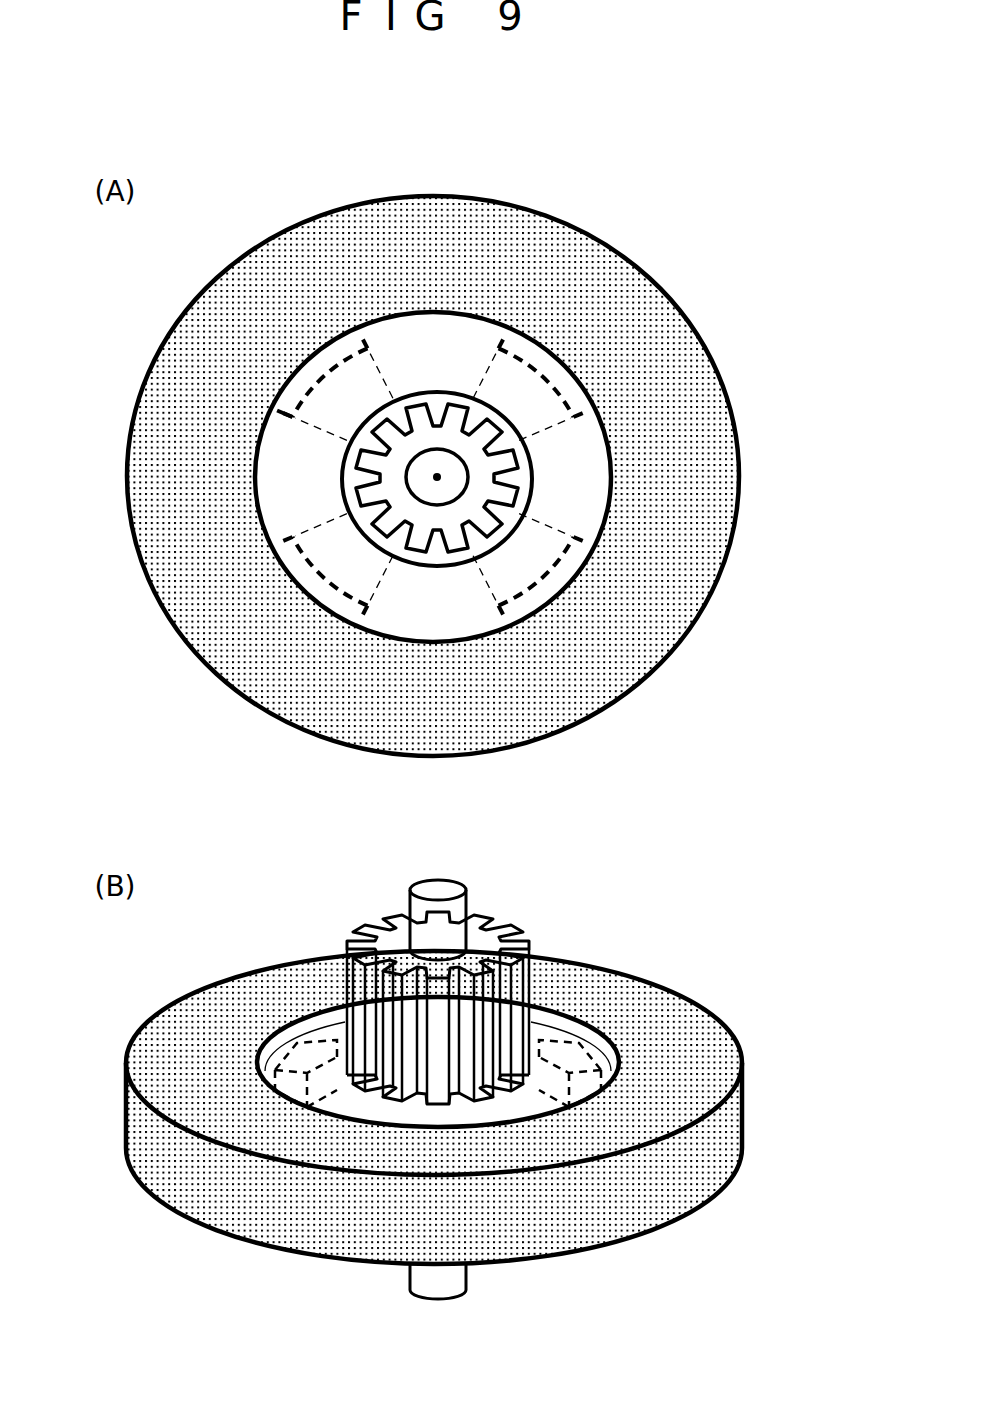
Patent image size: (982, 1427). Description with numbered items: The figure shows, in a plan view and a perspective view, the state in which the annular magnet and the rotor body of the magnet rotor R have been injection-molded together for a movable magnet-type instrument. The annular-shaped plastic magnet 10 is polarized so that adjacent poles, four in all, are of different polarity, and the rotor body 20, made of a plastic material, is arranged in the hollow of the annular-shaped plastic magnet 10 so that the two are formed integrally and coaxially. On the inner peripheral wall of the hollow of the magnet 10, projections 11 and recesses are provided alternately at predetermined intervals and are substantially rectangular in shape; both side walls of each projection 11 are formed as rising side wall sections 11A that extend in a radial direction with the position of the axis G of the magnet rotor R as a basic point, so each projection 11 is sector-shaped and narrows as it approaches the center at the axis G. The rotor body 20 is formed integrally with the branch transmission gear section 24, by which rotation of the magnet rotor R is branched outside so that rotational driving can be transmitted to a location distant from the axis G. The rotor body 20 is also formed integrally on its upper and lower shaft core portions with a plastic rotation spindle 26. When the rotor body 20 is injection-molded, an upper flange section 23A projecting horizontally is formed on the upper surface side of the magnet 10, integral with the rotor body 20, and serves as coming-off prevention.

The annular-shaped plastic magnet 10 is at (684, 369).
The projection 11 is at (313, 392).
The rising side wall section 11A is at (296, 416).
The rotor body 20 is at (590, 468).
The upper flange section 23A is at (300, 1045).
The branch transmission gear section 24 is at (520, 489).
The rotation spindle 26 is at (446, 499).
The axis G is at (441, 494).
The magnet rotor R is at (752, 241).